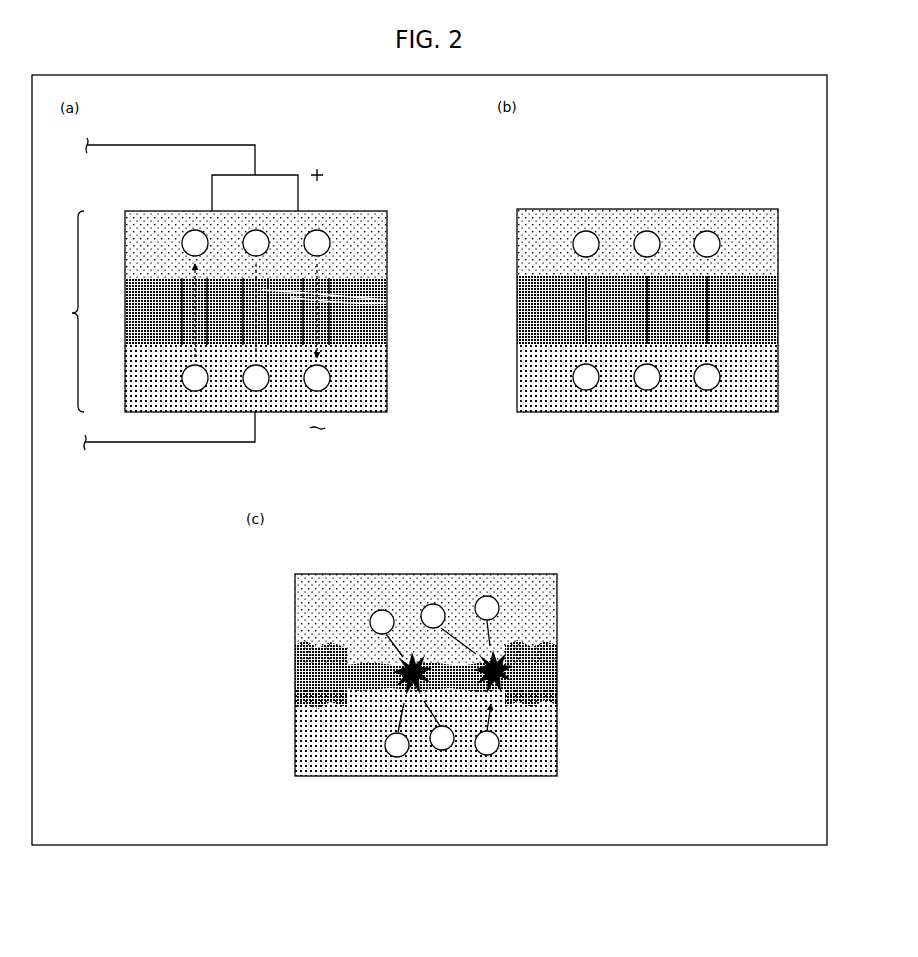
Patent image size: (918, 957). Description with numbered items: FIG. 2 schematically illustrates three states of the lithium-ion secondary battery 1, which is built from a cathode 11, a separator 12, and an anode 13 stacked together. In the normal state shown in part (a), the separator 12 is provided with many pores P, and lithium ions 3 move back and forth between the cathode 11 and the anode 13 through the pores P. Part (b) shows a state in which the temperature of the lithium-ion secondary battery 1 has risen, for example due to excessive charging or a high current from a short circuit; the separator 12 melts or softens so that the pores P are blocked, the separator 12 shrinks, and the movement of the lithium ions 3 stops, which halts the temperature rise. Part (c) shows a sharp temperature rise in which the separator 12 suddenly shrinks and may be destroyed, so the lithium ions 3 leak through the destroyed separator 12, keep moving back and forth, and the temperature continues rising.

The lithium-ion secondary battery 1 is at (70, 311).
The cathode 11 is at (125, 243).
The separator 12 is at (125, 312).
The anode 13 is at (125, 377).
The lithium ions 3 is at (186, 233).
The pores P is at (386, 301).